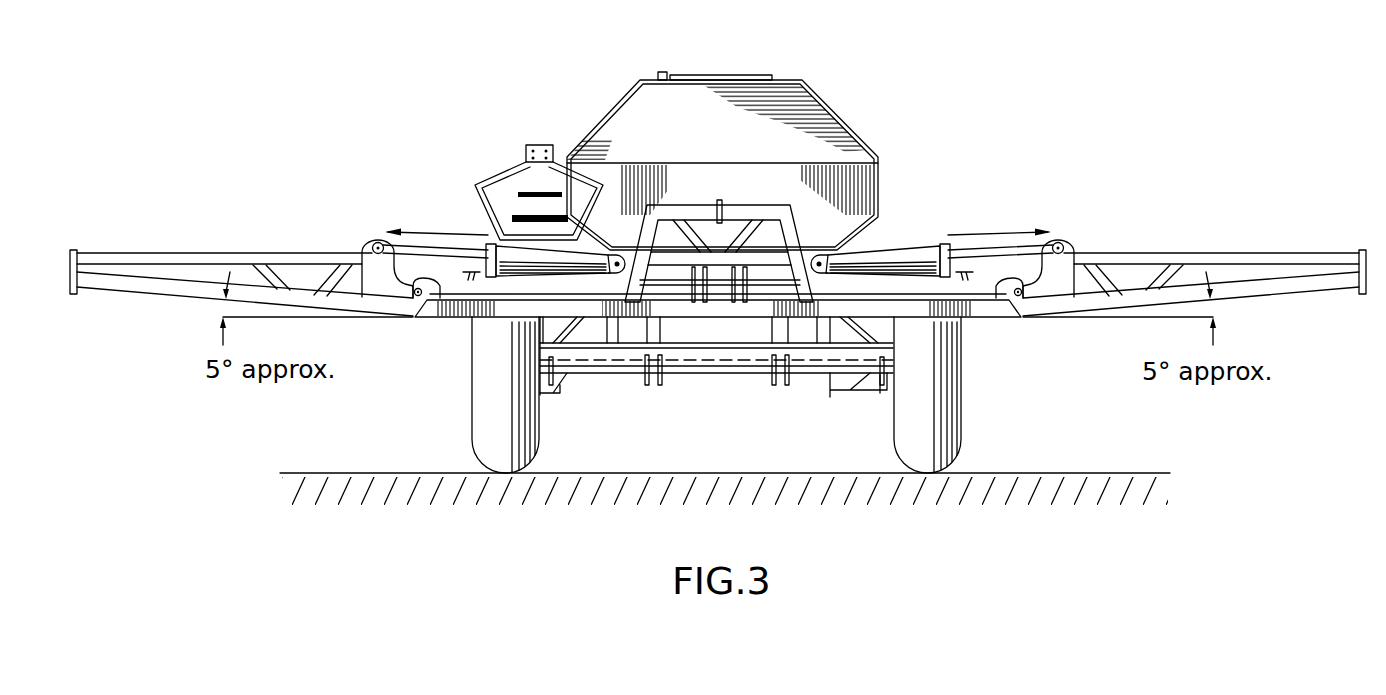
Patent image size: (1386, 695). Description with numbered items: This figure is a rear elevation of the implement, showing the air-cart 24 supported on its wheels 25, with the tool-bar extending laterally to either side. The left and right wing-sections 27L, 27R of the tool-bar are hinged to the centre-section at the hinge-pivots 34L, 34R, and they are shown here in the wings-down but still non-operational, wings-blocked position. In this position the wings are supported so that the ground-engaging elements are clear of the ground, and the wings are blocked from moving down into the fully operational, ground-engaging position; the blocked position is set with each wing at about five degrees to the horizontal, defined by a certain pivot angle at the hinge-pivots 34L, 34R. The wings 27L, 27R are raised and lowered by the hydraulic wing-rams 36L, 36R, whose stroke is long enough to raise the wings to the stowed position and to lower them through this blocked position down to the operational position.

The air-cart 24 is at (780, 88).
The wheels 25 is at (478, 424).
The left wing-section 27L is at (160, 252).
The right wing-section 27R is at (1213, 252).
The left hinge-pivot 34L is at (418, 316).
The right hinge-pivot 34R is at (1018, 316).
The left hydraulic wing-ram 36L is at (440, 245).
The right hydraulic wing-ram 36R is at (922, 246).